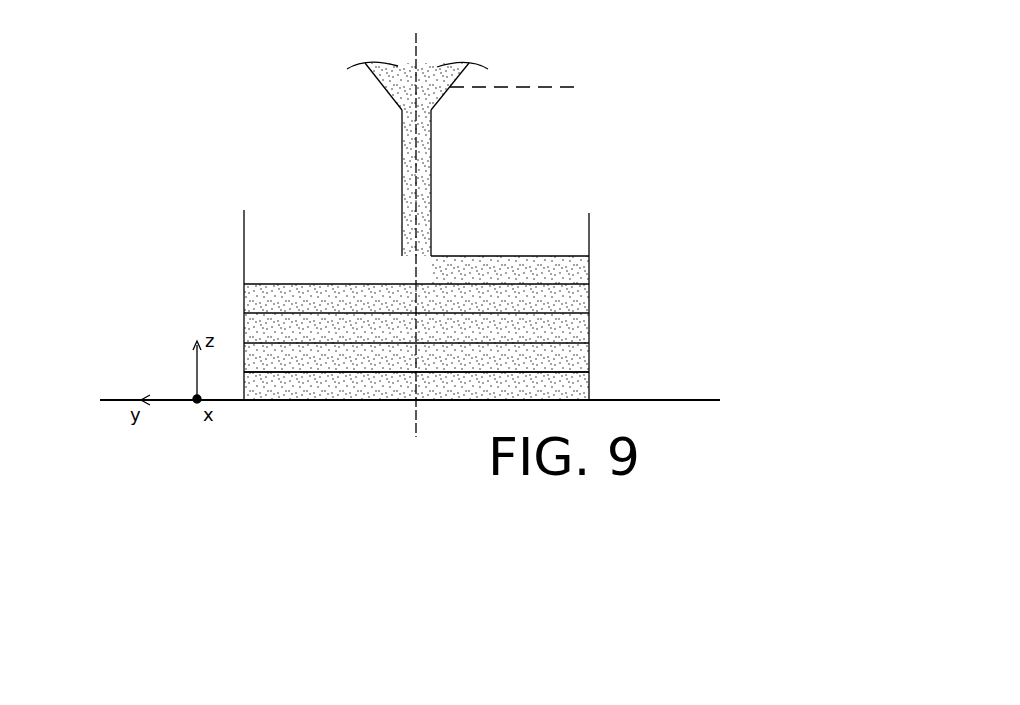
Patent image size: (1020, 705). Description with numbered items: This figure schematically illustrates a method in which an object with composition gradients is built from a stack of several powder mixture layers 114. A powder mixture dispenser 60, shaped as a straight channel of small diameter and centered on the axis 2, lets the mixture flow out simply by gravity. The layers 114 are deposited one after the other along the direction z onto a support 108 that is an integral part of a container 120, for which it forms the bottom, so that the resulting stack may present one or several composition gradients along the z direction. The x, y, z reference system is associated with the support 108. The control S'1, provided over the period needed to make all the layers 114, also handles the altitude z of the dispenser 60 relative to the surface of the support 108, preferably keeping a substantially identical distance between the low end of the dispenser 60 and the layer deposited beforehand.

The axis 2 is at (416, 50).
The powder mixture dispenser 60 is at (431, 168).
The container 120 is at (244, 238).
The layers 114 is at (582, 270).
The support 108 is at (318, 385).
The control S'1 is at (534, 74).